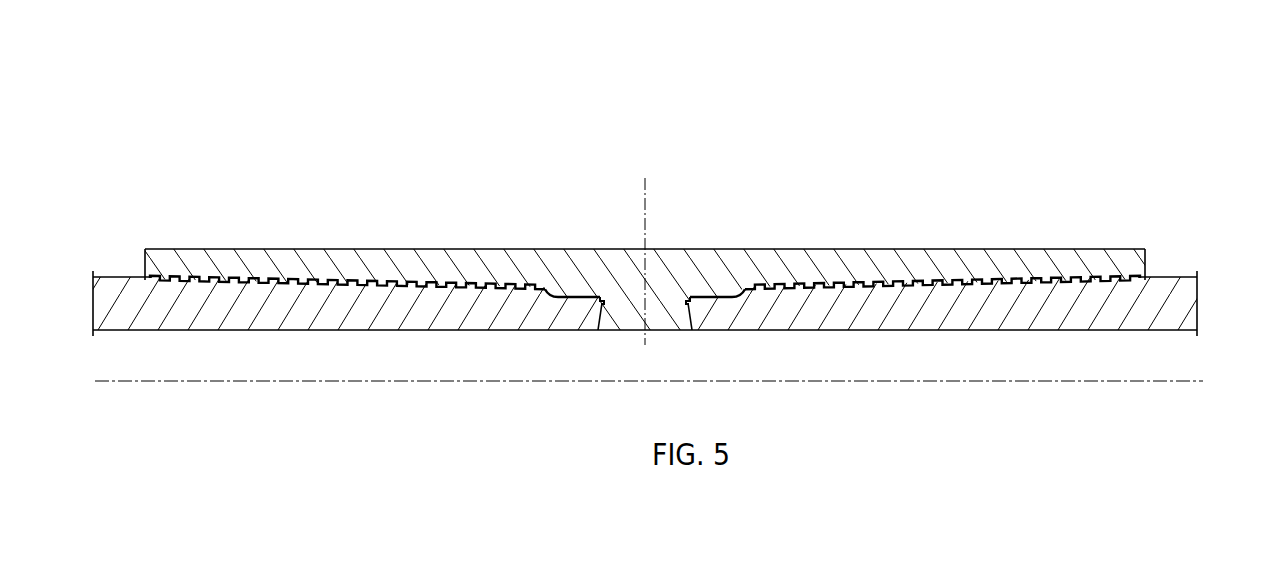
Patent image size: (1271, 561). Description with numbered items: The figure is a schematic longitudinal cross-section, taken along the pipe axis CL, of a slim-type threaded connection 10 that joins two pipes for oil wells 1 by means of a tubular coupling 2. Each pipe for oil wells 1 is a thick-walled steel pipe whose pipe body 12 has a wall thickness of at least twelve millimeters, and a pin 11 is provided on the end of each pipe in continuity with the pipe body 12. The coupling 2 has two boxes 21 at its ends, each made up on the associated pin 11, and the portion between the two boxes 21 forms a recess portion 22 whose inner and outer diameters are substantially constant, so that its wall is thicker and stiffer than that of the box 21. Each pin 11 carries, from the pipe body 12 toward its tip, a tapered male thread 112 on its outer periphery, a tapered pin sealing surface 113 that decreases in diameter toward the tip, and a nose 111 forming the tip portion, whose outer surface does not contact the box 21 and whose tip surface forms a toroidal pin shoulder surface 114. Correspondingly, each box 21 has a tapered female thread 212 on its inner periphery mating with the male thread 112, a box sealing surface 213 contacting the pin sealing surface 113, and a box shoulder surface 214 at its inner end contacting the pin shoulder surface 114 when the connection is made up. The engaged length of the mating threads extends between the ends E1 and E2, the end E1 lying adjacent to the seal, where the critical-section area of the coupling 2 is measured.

The pipe for oil wells 1 is at (93, 242).
The tubular coupling 2 is at (682, 203).
The threaded connection 10 is at (1010, 90).
The pin 11 is at (198, 335).
The pipe body 12 is at (131, 276).
The box 21 is at (190, 241).
The recess portion 22 is at (665, 265).
The nose 111 is at (580, 309).
The male thread 112 is at (400, 297).
The pin sealing surface 113 is at (548, 293).
The pin shoulder surface 114 is at (603, 334).
The female thread 212 is at (388, 282).
The box sealing surface 213 is at (556, 294).
The box shoulder surface 214 is at (594, 297).
The end of engaged length adjacent to seal E1 is at (512, 279).
The end of engaged length E2 is at (157, 267).
The pipe axis CL is at (666, 382).